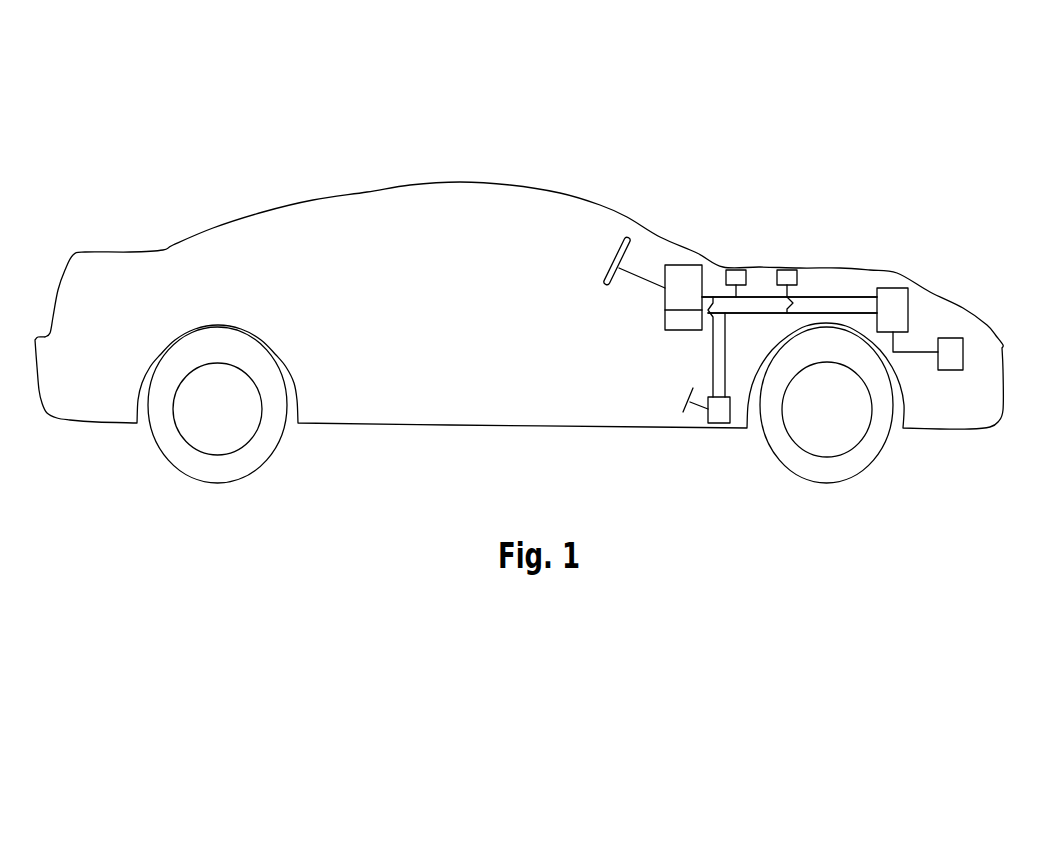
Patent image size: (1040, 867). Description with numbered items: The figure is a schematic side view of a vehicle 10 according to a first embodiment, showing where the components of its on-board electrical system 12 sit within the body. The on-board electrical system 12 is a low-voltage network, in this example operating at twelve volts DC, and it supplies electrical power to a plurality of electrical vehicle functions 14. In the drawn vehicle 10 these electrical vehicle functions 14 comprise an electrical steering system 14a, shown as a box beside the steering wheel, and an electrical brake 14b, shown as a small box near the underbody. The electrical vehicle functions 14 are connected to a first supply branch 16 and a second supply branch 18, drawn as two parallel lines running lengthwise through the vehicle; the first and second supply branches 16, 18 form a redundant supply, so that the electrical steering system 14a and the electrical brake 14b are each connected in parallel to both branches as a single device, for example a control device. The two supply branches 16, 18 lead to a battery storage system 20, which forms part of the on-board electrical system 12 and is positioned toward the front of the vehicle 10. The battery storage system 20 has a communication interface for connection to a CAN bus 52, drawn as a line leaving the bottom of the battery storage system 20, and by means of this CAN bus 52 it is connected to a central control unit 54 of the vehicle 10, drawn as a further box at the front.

The vehicle 10 is at (648, 178).
The on-board electrical system 12 is at (831, 130).
The electrical vehicle functions 14 is at (737, 270).
The electrical steering system 14a is at (683, 265).
The electrical brake 14b is at (716, 424).
The first supply branch 16 is at (760, 297).
The second supply branch 18 is at (808, 313).
The battery storage system 20 is at (892, 288).
The CAN bus 52 is at (920, 353).
The central control unit 54 is at (948, 338).